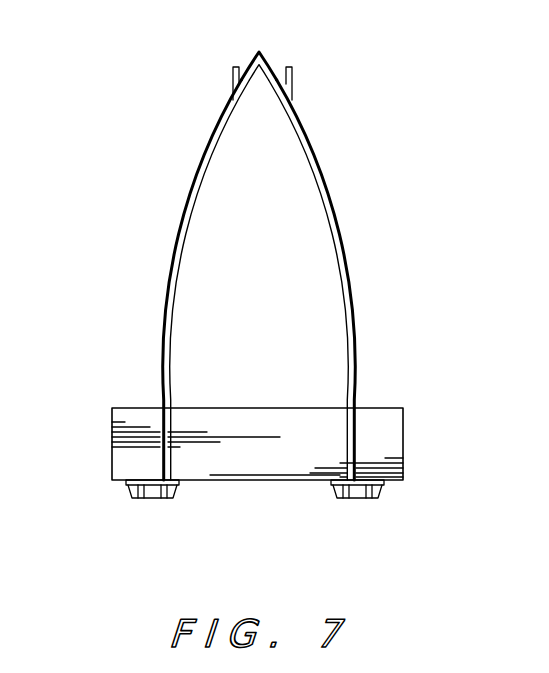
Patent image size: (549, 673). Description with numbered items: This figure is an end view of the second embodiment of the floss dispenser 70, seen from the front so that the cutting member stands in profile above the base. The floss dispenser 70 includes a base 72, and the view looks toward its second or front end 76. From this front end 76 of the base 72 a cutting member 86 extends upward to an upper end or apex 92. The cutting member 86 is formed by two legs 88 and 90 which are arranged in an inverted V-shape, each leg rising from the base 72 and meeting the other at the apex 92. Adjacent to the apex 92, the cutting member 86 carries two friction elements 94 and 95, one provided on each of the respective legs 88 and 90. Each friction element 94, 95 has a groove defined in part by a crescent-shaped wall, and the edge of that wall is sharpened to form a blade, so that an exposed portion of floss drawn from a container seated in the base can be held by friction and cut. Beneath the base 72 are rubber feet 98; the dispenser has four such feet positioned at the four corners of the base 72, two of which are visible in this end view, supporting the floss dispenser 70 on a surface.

The floss dispenser 70 is at (105, 299).
The base 72 is at (385, 438).
The second or front end 76 is at (243, 455).
The cutting member 86 is at (264, 241).
The leg 88 is at (327, 203).
The leg 90 is at (181, 237).
The apex 92 is at (259, 52).
The friction element 94 is at (292, 80).
The friction element 95 is at (233, 80).
The rubber feet 98 is at (158, 499).